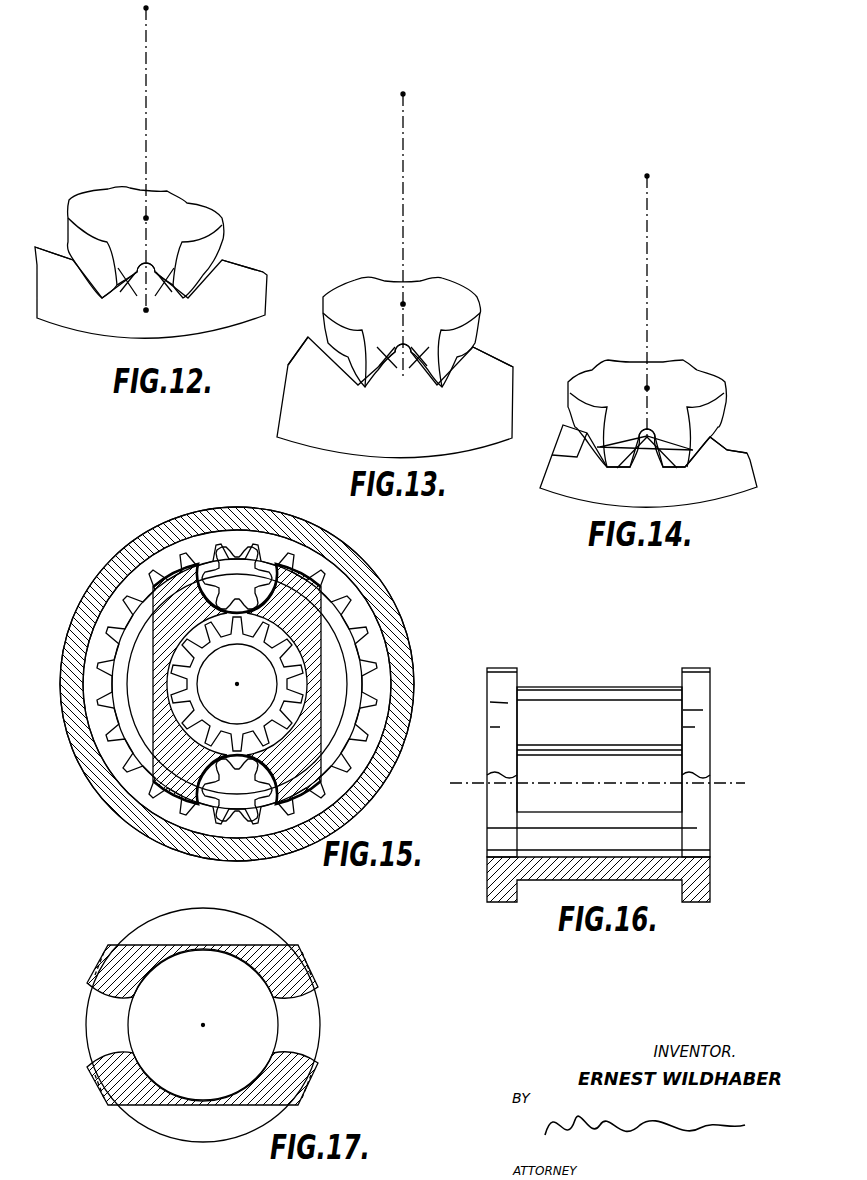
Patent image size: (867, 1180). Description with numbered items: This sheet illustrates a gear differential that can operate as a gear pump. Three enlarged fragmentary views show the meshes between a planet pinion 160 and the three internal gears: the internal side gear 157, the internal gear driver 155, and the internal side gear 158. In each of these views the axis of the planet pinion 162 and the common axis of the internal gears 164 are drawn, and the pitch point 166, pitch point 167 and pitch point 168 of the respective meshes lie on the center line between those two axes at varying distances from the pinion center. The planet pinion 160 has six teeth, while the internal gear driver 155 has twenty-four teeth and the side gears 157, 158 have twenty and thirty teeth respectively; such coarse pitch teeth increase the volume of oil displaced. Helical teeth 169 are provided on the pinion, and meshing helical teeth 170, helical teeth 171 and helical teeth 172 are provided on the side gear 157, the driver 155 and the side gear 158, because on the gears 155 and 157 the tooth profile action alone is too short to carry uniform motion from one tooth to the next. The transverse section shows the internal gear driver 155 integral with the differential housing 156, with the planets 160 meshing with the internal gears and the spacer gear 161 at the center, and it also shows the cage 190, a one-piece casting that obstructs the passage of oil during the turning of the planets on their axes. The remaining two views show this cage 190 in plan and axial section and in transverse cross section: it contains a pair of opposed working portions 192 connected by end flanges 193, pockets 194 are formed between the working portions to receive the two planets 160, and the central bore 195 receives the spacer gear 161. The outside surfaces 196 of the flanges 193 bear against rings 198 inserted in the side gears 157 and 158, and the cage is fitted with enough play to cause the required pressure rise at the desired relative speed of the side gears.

In FIG. 13, the internal gear driver 155 is at (460, 443).
In FIG. 15, the internal gear driver 155 is at (358, 757).
In FIG. 15, the differential housing 156 is at (402, 652).
In FIG. 12, the internal side gear 157 is at (120, 325).
In FIG. 14, the internal side gear 158 is at (715, 490).
In FIG. 12, the planet pinion 160 is at (157, 197).
In FIG. 13, the planet pinion 160 is at (438, 293).
In FIG. 14, the planet pinion 160 is at (697, 380).
In FIG. 15, the planet pinion 160 is at (245, 555).
In FIG. 15, the spacer gear 161 is at (180, 715).
In FIG. 12, the axis of the planet pinion 162 is at (146, 218).
In FIG. 13, the axis of the planet pinion 162 is at (403, 304).
In FIG. 14, the axis of the planet pinion 162 is at (647, 388).
In FIG. 12, the common axis of the internal gears 164 is at (146, 8).
In FIG. 13, the common axis of the internal gears 164 is at (403, 94).
In FIG. 14, the common axis of the internal gears 164 is at (647, 176).
In FIG. 12, the pitch point 166 is at (146, 310).
In FIG. 13, the pitch point 167 is at (403, 373).
In FIG. 14, the pitch point 168 is at (647, 450).
In FIG. 12, the helical teeth 169 is at (82, 218).
In FIG. 13, the helical teeth 169 is at (470, 307).
In FIG. 12, the helical teeth 170 is at (223, 267).
In FIG. 13, the helical teeth 171 is at (475, 360).
In FIG. 14, the helical teeth 172 is at (712, 450).
In FIG. 15, the cage 190 is at (307, 617).
In FIG. 16, the cage 190 is at (605, 687).
In FIG. 15, the working portion 192 is at (183, 800).
In FIG. 16, the working portion 192 is at (583, 868).
In FIG. 17, the working portion 192 is at (133, 960).
In FIG. 16, the end flange 193 is at (500, 703).
In FIG. 17, the end flange 193 is at (98, 1040).
In FIG. 17, the pocket 194 is at (105, 1007).
In FIG. 17, the central bore 195 is at (228, 978).
In FIG. 15, the outside surface 196 is at (140, 657).
In FIG. 16, the outside surface 196 is at (505, 668).
In FIG. 15, the ring 198 is at (120, 696).